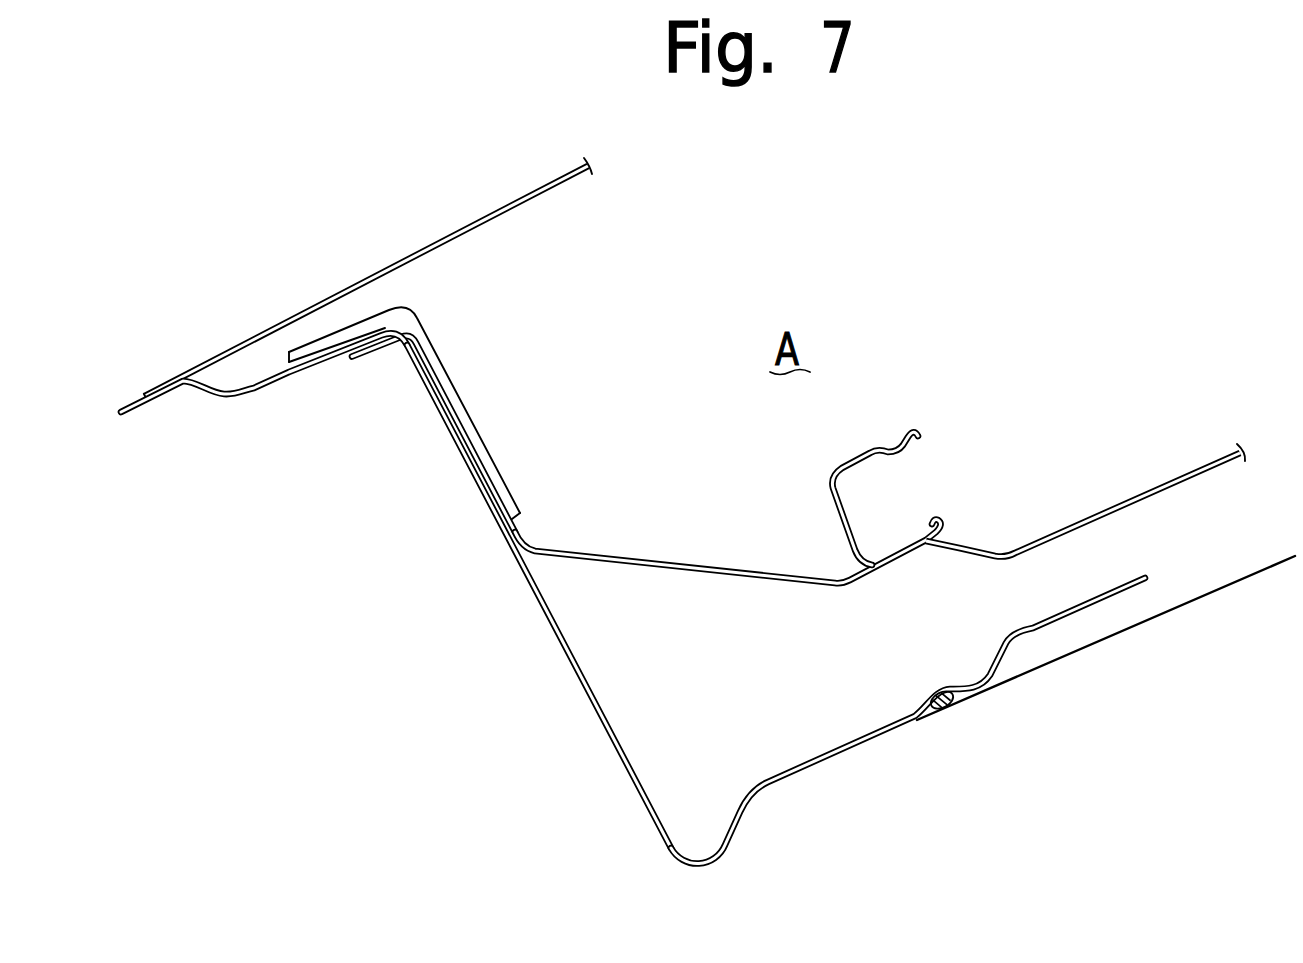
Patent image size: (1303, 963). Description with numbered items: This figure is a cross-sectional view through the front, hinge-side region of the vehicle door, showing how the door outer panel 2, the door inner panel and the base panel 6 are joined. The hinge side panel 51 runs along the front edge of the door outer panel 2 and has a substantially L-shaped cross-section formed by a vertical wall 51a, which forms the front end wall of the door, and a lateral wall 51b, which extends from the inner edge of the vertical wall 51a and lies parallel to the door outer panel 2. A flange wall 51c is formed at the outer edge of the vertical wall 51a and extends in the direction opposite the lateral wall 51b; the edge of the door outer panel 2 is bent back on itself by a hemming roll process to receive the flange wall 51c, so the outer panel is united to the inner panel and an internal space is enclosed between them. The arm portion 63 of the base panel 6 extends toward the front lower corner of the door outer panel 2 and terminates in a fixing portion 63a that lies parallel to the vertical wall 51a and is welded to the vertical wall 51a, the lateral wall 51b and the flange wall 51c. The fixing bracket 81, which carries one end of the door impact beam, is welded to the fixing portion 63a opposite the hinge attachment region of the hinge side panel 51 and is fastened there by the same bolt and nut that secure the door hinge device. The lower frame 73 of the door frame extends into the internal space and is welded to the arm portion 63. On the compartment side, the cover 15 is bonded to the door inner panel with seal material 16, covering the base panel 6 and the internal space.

The door outer panel 2 is at (424, 237).
The base panel 6 is at (1106, 495).
The cover 15 is at (1065, 656).
The seal material 16 is at (950, 708).
The hinge side panel 51 is at (633, 622).
The vertical wall 51a is at (558, 641).
The lateral wall 51b is at (880, 736).
The flange wall 51c is at (250, 394).
The arm portion 63 is at (640, 516).
The fixing portion 63a is at (461, 433).
The lower frame 73 is at (834, 500).
The fixing bracket 81 is at (458, 396).